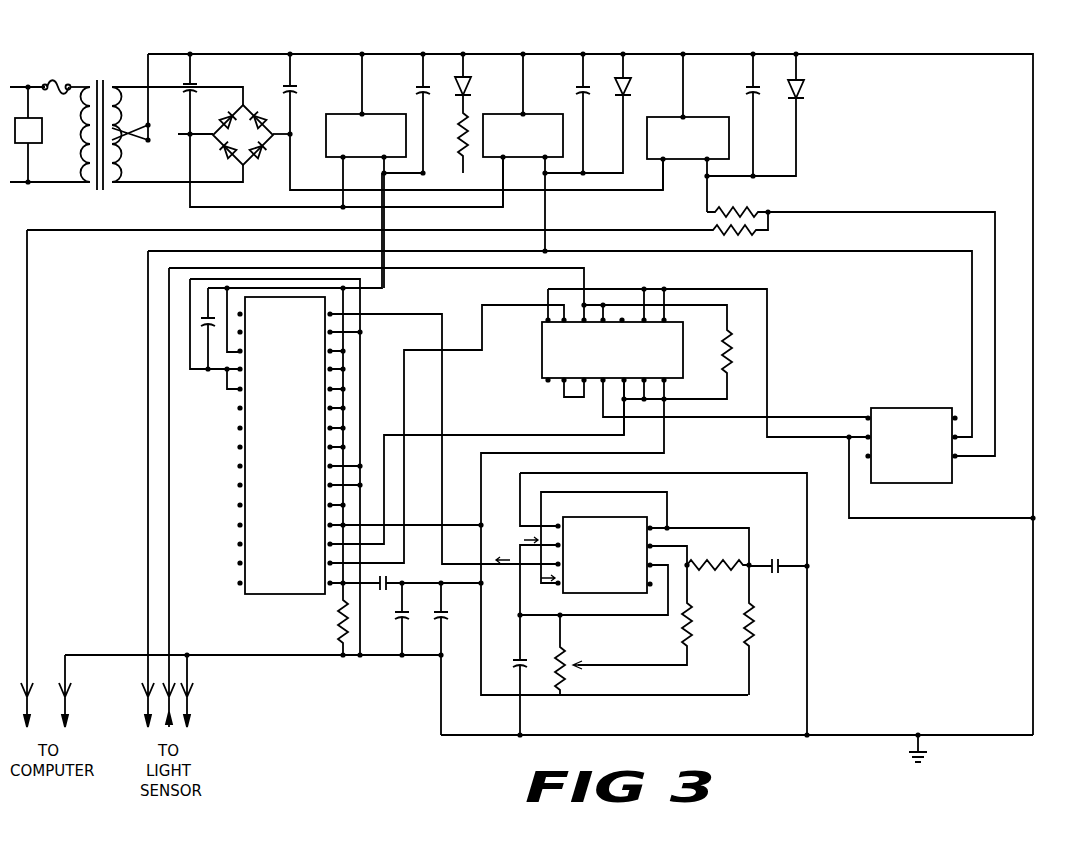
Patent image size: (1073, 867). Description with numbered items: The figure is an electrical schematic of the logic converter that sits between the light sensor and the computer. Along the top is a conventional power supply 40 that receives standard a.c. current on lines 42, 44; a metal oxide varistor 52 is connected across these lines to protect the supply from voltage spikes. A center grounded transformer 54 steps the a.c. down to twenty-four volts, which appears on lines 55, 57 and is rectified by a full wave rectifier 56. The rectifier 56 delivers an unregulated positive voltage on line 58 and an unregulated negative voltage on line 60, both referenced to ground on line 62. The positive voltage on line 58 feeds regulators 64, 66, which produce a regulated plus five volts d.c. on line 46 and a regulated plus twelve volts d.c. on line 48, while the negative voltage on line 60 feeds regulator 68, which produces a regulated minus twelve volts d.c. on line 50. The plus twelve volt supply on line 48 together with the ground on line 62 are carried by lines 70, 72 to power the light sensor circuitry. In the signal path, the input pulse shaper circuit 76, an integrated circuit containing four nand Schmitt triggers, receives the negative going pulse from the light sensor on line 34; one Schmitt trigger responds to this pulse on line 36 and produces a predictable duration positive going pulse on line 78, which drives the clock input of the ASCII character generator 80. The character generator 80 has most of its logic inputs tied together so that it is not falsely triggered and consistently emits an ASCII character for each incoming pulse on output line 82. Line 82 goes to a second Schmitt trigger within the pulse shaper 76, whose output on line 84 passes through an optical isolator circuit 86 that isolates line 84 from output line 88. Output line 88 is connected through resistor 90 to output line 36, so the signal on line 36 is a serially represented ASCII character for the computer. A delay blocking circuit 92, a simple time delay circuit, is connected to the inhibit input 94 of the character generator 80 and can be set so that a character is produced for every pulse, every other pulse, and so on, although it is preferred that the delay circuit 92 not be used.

The line 34 is at (166, 735).
The output line 36 is at (24, 712).
The power supply 40 is at (452, 57).
The a.c. line 42 is at (12, 87).
The a.c. line 44 is at (18, 190).
The line 46 is at (384, 173).
The line 48 is at (545, 173).
The line 50 is at (707, 176).
The metal oxide varistor 52 is at (42, 133).
The center grounded transformer 54 is at (92, 190).
The line 55 is at (128, 87).
The full wave rectifier 56 is at (250, 112).
The line 57 is at (134, 190).
The line 58 is at (178, 136).
The line 60 is at (290, 134).
The line 62 is at (308, 56).
The regulator 64 is at (368, 118).
The regulator 66 is at (524, 118).
The regulator 68 is at (690, 118).
The line 70 is at (146, 712).
The line 72 is at (190, 714).
The input pulse shaper circuit 76 is at (684, 352).
The line 78 is at (528, 305).
The ASCII character generator 80 is at (243, 422).
The output line 82 is at (385, 436).
The line 84 is at (600, 413).
The optical isolator circuit 86 is at (925, 410).
The output line 88 is at (962, 458).
The resistor 90 is at (768, 238).
The delay blocking circuit 92 is at (562, 592).
The inhibit input 94 is at (408, 316).